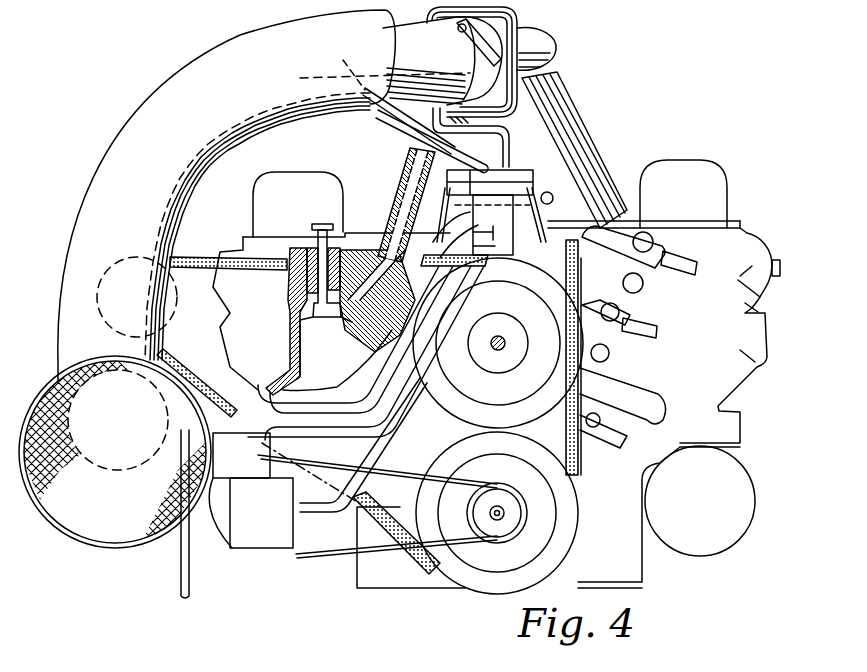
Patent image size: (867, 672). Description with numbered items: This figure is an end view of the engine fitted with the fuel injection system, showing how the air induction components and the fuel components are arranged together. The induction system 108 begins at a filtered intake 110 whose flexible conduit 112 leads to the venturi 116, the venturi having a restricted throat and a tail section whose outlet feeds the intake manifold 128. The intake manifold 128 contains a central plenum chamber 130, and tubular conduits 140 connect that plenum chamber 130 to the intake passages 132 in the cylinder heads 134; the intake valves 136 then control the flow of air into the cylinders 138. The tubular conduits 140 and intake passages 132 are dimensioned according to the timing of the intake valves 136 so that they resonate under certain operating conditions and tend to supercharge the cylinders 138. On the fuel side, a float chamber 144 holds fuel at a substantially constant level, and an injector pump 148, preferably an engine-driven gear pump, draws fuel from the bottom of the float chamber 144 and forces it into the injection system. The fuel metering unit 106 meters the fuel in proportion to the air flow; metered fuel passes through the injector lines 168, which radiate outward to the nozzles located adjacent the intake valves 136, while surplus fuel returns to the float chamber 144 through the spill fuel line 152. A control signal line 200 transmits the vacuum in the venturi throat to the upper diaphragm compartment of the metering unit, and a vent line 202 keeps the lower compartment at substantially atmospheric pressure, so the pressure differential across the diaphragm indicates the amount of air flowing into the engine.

The fuel metering unit 106 is at (532, 164).
The induction system 108 is at (109, 150).
The filtered intake 110 is at (93, 535).
The flexible conduit 112 is at (168, 86).
The venturi 116 is at (417, 24).
The intake manifold 128 is at (533, 29).
The central plenum chamber 130 is at (433, 398).
The intake passages 132 is at (380, 228).
The cylinder heads 134 is at (748, 243).
The intake valves 136 is at (318, 310).
The cylinders 138 is at (347, 343).
The tubular conduits 140 is at (403, 173).
The float chamber 144 is at (241, 470).
The injector pump 148 is at (233, 528).
The spill fuel line 152 is at (262, 400).
The injector lines 168 is at (416, 271).
The control signal line 200 is at (376, 126).
The vent line 202 is at (350, 88).